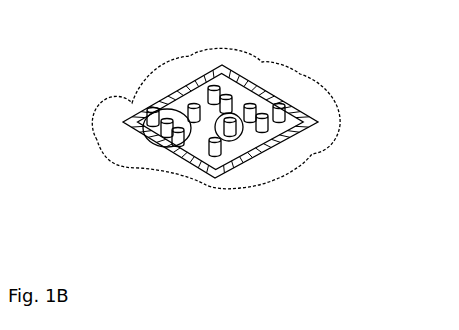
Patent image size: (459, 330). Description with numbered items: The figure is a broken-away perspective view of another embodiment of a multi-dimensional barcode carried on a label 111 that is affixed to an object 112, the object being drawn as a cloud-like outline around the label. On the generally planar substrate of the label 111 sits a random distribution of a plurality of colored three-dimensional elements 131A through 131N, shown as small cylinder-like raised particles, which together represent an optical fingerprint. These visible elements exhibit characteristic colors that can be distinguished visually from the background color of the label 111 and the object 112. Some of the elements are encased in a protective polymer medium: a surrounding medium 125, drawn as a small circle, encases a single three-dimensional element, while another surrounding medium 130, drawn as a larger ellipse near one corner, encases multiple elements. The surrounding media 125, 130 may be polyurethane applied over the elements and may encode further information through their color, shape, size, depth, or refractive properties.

The label 111 is at (184, 170).
The object 112 is at (110, 155).
The surrounding medium 125 is at (234, 151).
The surrounding medium 130 is at (144, 102).
The colored three-dimensional element 131N is at (184, 126).
The colored three-dimensional element 131A is at (289, 106).